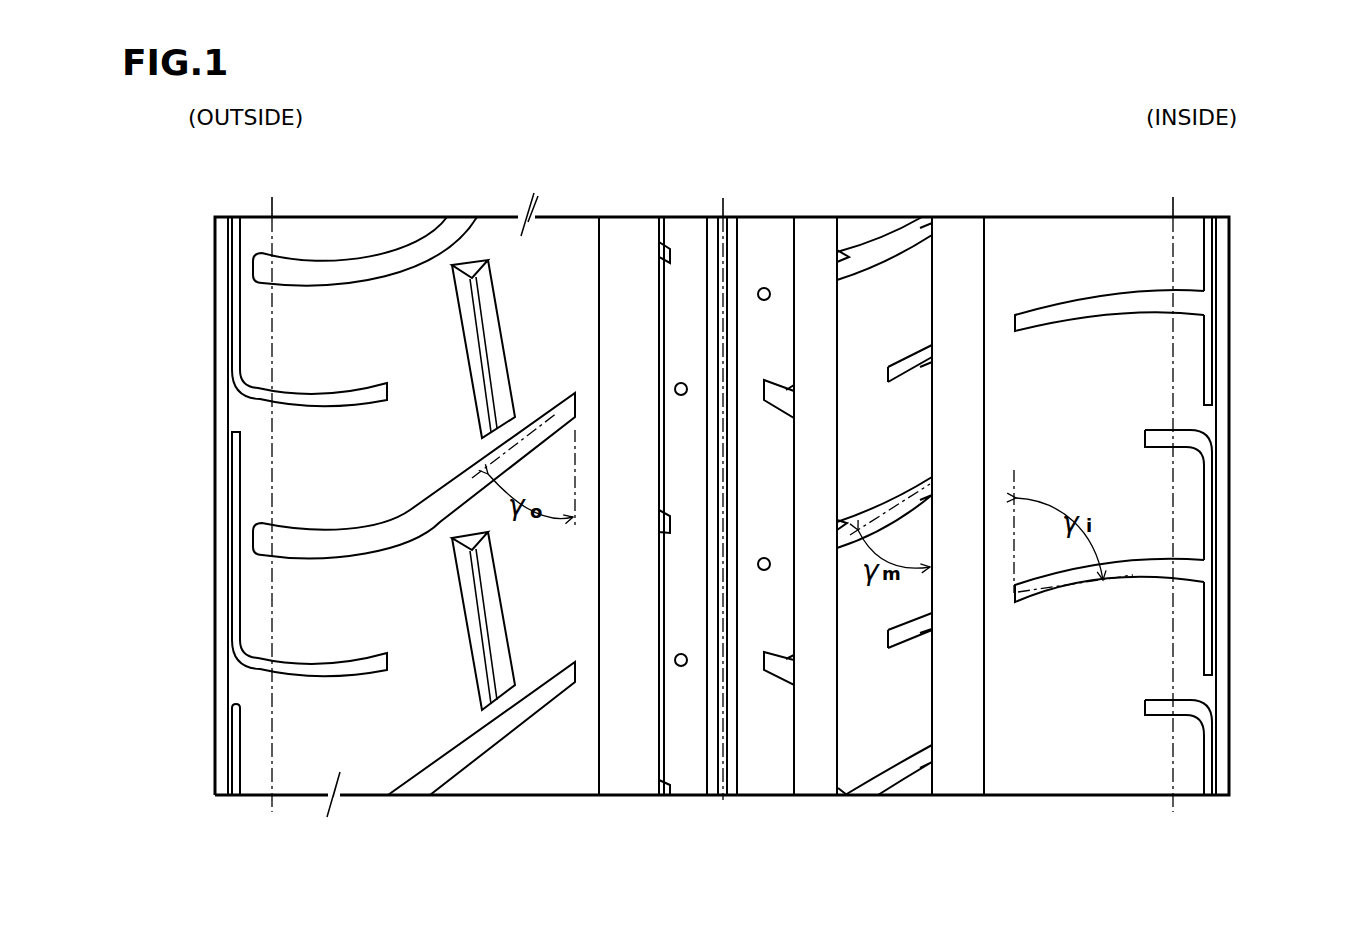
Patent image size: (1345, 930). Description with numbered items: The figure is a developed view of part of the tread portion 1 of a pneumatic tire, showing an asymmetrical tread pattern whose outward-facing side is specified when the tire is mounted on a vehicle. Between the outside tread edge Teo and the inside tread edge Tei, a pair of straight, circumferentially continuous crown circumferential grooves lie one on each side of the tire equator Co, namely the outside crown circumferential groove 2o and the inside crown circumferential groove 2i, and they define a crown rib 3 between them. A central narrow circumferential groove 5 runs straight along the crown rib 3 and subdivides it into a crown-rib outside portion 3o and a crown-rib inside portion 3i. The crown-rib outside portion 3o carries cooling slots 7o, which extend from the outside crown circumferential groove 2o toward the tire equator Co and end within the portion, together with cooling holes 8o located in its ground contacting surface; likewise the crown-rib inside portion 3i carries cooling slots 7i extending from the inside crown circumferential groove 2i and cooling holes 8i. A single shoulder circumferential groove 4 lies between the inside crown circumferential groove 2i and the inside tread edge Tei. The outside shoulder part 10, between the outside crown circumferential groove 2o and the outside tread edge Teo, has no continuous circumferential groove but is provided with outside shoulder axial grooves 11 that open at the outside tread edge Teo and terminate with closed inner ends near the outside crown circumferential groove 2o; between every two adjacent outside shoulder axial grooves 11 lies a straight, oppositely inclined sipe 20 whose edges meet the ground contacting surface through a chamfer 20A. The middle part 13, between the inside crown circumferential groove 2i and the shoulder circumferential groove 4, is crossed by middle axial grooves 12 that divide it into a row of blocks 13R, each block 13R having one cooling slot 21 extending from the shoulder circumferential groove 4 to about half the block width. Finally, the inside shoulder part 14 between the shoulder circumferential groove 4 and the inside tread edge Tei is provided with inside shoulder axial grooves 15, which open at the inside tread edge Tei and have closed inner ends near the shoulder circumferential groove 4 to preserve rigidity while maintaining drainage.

The tread portion 1 is at (1250, 194).
The outside crown circumferential groove 2o is at (620, 232).
The inside crown circumferential groove 2i is at (825, 218).
The crown rib 3 is at (772, 152).
The crown-rib outside portion 3o is at (679, 218).
The crown-rib inside portion 3i is at (765, 218).
The shoulder circumferential groove 4 is at (953, 218).
The central narrow circumferential groove 5 is at (718, 731).
The cooling slots 7o is at (661, 528).
The cooling slots 7i is at (780, 667).
The cooling holes 8o is at (679, 666).
The cooling holes 8i is at (767, 571).
The outside shoulder part 10 is at (424, 212).
The outside shoulder axial grooves 11 is at (417, 520).
The middle axial grooves 12 is at (912, 503).
The middle part 13 is at (893, 213).
The blocks 13R is at (877, 724).
The inside shoulder part 14 is at (1072, 213).
The inside shoulder axial grooves 15 is at (1120, 583).
The sipe 20 is at (476, 648).
The chamfer 20A is at (502, 670).
The cooling slots 21 is at (905, 647).
The outside tread edge Teo is at (269, 492).
The inside tread edge Tei is at (1170, 492).
The tire equator Co is at (723, 487).